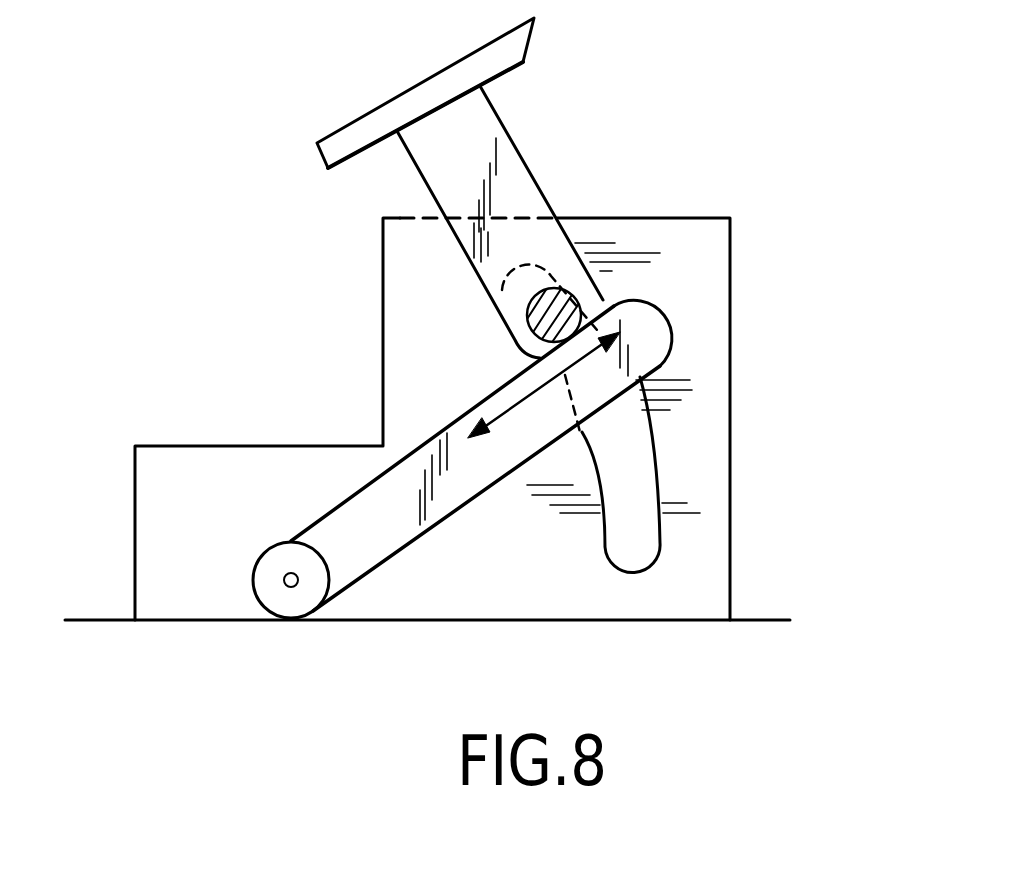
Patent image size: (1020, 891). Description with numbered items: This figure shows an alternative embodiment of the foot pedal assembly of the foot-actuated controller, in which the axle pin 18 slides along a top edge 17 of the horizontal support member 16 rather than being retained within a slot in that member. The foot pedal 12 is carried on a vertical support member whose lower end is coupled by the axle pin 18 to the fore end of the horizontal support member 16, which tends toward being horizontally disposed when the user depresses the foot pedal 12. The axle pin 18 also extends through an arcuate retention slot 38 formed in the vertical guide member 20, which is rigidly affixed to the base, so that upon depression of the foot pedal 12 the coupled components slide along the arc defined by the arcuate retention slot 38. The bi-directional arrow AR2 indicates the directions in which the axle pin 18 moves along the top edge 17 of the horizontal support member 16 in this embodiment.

The foot pedal 12 is at (520, 42).
The horizontal support member 16 is at (372, 543).
The top edge 17 is at (480, 402).
The axle pin 18 is at (557, 315).
The vertical guide member 20 is at (685, 232).
The arcuate retention slot 38 is at (642, 533).
The bi-directional arrow AR2 is at (575, 364).